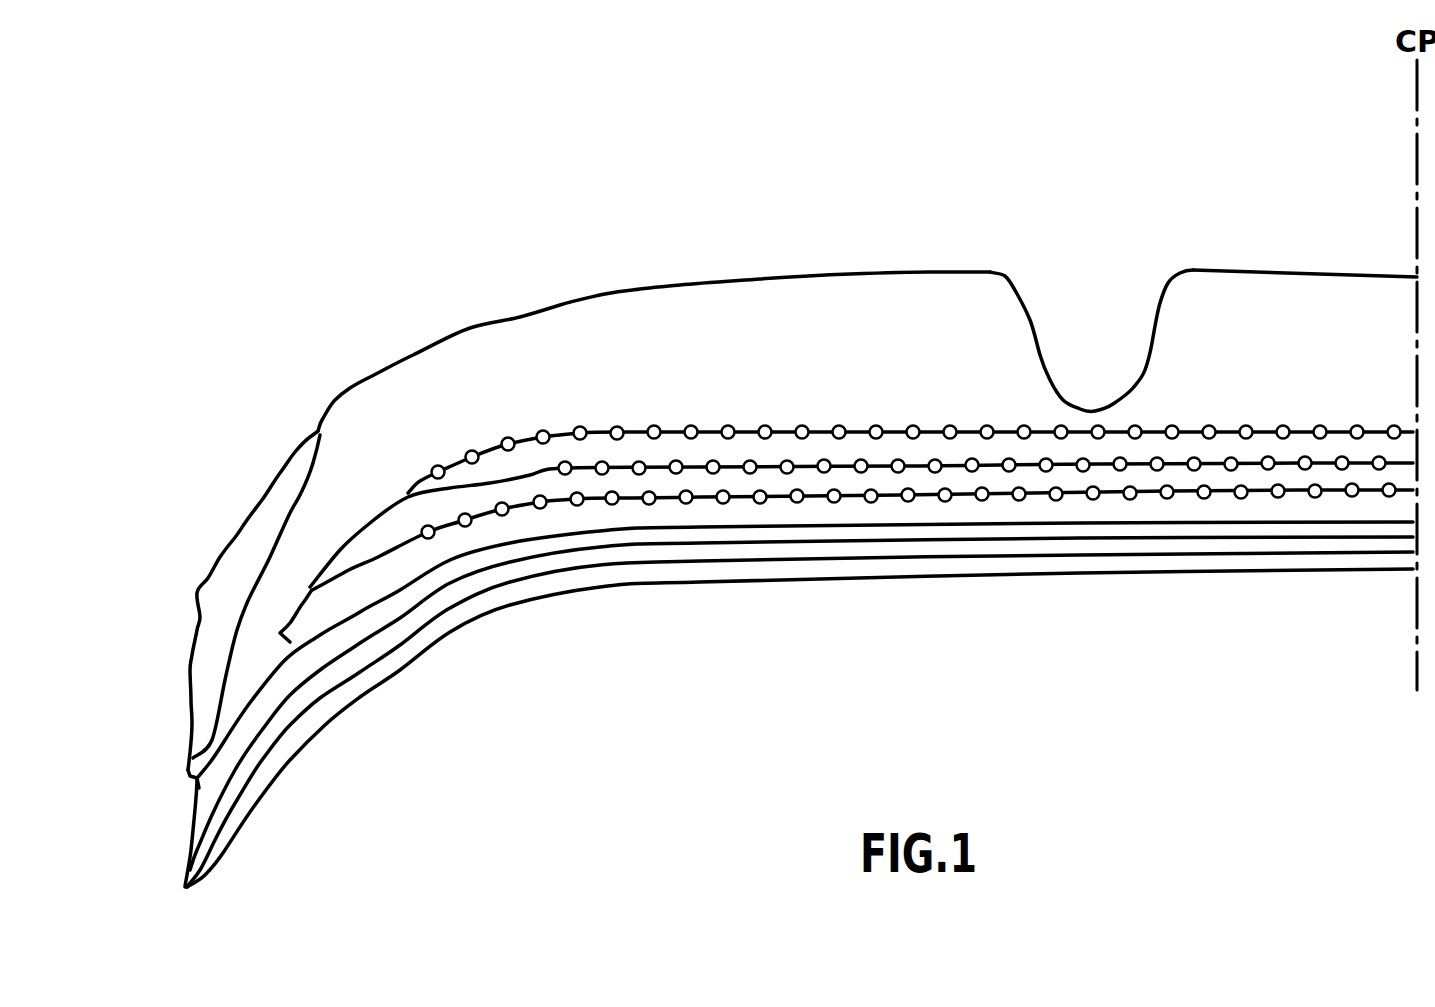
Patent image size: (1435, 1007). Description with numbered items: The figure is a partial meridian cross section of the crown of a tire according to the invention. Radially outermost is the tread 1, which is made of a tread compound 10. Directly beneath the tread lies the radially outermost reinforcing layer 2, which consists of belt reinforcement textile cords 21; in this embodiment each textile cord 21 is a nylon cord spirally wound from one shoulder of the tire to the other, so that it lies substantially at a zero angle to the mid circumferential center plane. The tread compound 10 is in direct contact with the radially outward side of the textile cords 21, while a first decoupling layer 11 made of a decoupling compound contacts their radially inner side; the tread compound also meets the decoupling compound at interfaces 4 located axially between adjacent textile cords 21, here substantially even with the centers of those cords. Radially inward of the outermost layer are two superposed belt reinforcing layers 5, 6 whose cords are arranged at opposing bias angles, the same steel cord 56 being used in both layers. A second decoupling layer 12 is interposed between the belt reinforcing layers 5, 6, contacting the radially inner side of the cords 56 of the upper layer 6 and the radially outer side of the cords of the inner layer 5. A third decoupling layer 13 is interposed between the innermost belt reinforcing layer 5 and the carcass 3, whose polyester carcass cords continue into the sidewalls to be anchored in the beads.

The tread 1 is at (615, 333).
The radially outermost reinforcing layer 2 is at (550, 427).
The carcass 3 is at (323, 628).
The interfaces 4 is at (1230, 428).
The belt reinforcing layer 5 is at (665, 522).
The belt reinforcing layer 6 is at (557, 483).
The steel cord 56 is at (861, 595).
The tread compound 10 is at (928, 362).
The first decoupling layer 11 is at (957, 453).
The second decoupling layer 12 is at (1113, 483).
The third decoupling layer 13 is at (1250, 510).
The textile cord 21 is at (803, 430).